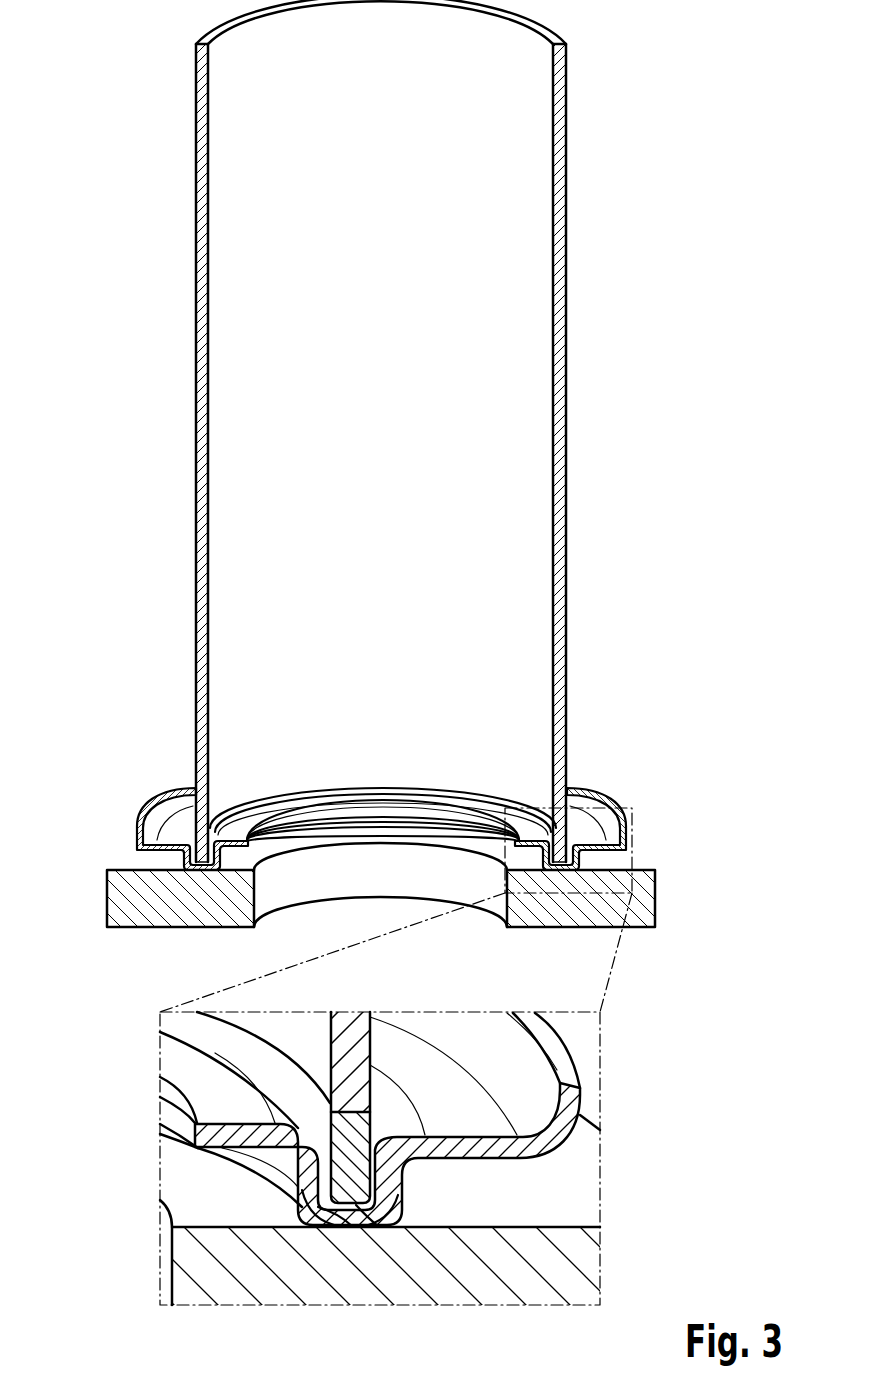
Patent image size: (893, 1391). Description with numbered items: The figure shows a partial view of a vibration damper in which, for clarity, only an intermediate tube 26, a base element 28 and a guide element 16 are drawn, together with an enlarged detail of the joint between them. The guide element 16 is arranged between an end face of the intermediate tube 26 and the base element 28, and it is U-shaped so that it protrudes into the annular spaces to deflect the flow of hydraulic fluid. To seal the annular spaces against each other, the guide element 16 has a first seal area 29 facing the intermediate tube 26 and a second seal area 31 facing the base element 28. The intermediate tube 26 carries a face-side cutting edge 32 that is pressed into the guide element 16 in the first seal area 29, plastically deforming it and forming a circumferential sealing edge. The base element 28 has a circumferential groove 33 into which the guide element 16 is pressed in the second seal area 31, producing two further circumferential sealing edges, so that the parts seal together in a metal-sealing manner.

The guide element 16 is at (139, 846).
The intermediate tube 26 is at (199, 278).
The base element 28 is at (110, 893).
The first seal area 29 is at (392, 1230).
The second seal area 31 is at (365, 1233).
The face-side cutting edge 32 is at (350, 1230).
The circumferential groove 33 is at (340, 1230).